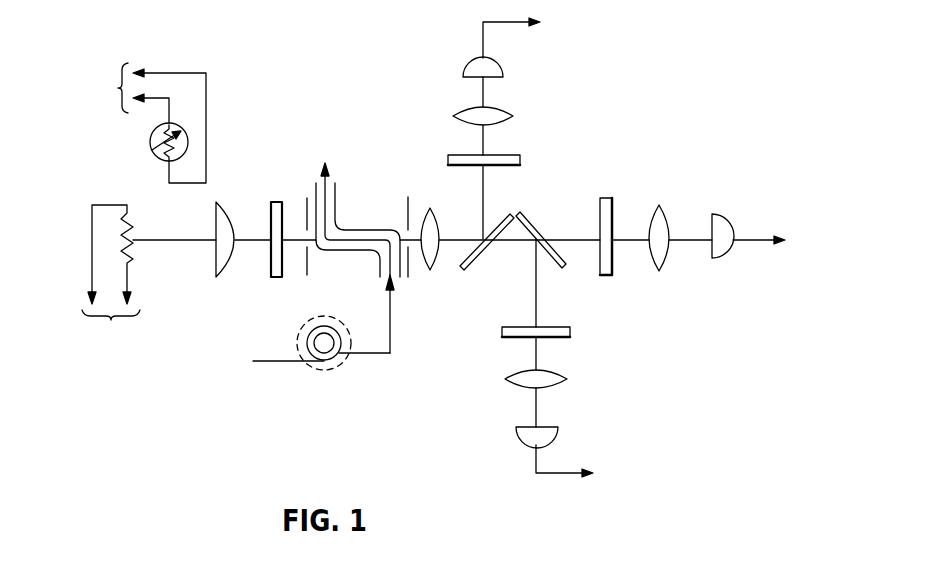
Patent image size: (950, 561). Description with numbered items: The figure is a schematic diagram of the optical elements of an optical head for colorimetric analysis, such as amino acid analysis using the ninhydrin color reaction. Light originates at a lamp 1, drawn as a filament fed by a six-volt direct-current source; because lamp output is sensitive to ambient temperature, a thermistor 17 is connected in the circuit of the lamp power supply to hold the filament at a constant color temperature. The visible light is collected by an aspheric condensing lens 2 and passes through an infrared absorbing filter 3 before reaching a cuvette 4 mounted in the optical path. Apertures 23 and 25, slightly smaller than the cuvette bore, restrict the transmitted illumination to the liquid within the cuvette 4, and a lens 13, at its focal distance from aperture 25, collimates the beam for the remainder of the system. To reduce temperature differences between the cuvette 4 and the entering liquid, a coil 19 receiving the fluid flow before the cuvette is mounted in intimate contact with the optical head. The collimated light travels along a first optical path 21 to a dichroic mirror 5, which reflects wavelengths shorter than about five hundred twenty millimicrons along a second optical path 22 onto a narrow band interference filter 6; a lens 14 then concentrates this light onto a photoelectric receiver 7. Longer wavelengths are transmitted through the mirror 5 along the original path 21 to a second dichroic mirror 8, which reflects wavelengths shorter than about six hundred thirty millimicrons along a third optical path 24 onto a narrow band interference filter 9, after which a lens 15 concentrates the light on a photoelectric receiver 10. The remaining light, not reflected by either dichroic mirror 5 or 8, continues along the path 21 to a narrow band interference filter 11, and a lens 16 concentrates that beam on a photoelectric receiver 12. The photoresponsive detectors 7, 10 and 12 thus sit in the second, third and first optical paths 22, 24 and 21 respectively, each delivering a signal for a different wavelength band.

The lamp 1 is at (135, 258).
The aspheric condensing lens 2 is at (223, 264).
The infrared absorbing filter 3 is at (277, 278).
The cuvette 4 is at (353, 229).
The dichroic mirror 5 is at (478, 263).
The narrow band interference filter 6 is at (520, 158).
The photoelectric receiver 7 is at (503, 69).
The second dichroic mirror 8 is at (538, 231).
The narrow band interference filter 9 is at (570, 334).
The photoelectric receiver 10 is at (557, 432).
The narrow band interference filter 11 is at (612, 199).
The photoelectric receiver 12 is at (733, 246).
The lens 13 is at (430, 207).
The lens 14 is at (513, 116).
The lens 15 is at (567, 379).
The lens 16 is at (664, 262).
The thermistor 17 is at (150, 143).
The coil 19 is at (338, 367).
The first optical path 21 is at (250, 239).
The second optical path 22 is at (485, 208).
The aperture 23 is at (307, 275).
The third optical path 24 is at (534, 285).
The aperture 25 is at (408, 277).